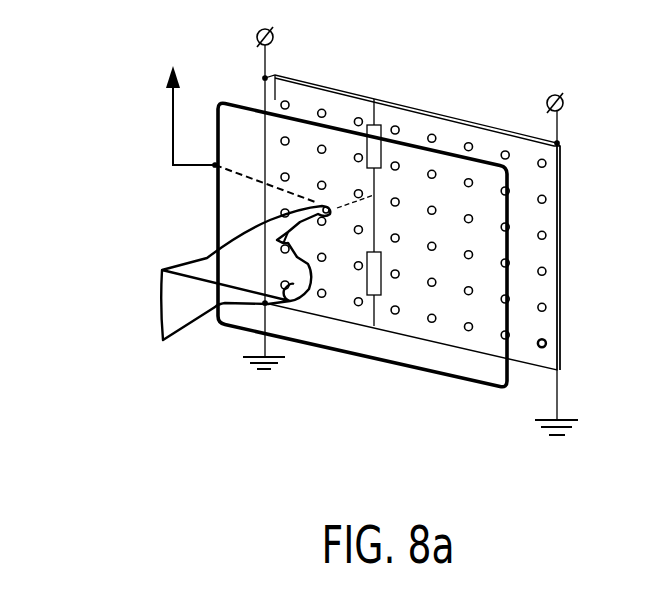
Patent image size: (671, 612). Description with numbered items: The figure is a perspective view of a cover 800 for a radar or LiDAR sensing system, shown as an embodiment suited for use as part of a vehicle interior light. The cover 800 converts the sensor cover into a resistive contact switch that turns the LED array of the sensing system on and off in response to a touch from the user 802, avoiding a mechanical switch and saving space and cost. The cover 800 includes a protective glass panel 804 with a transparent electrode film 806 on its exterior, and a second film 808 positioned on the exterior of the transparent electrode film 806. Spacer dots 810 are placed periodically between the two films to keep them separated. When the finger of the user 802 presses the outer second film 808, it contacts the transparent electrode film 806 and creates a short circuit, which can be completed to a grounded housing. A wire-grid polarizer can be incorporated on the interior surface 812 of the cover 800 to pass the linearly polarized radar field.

The cover 800 is at (128, 112).
The user 802 is at (205, 265).
The protective glass panel 804 is at (460, 117).
The transparent electrode film 806 is at (545, 218).
The second film 808 is at (466, 378).
The spacer dots 810 is at (322, 110).
The interior surface 812 is at (563, 260).